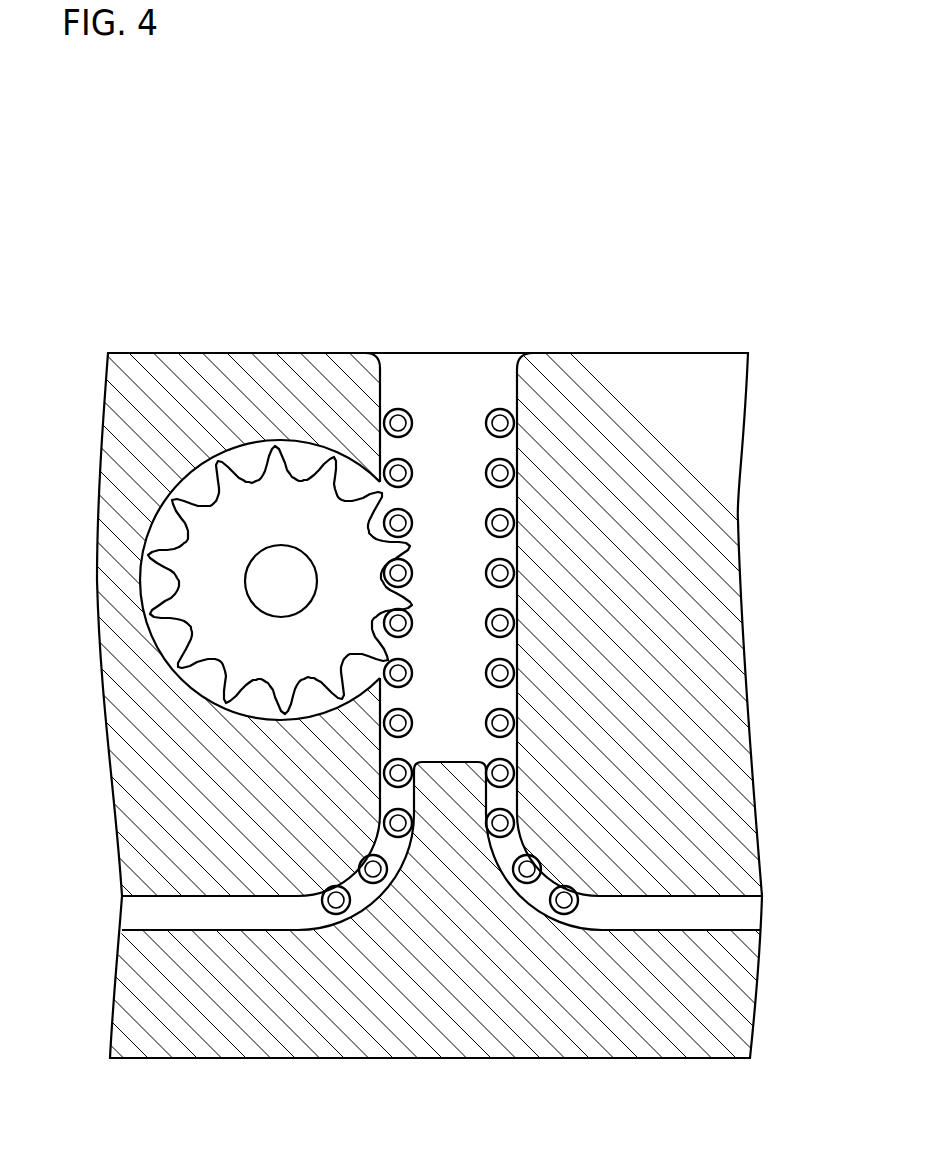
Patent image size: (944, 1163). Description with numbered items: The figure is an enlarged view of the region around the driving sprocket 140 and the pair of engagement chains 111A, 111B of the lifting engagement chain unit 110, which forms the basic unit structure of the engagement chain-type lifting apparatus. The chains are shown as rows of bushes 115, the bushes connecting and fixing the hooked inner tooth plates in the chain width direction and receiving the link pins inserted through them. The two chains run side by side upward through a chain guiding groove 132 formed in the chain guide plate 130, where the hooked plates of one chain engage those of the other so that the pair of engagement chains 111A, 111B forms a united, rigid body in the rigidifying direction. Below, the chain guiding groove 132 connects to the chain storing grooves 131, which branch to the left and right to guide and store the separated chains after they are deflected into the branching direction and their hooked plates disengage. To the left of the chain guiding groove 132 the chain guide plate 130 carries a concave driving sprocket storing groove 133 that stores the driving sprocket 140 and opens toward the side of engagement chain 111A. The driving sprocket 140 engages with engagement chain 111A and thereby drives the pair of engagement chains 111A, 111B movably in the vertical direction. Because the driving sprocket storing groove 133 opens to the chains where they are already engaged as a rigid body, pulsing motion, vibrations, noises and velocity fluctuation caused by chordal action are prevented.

The lifting engagement chain unit 110 is at (325, 180).
The engagement chain 111A is at (397, 388).
The engagement chain 111B is at (497, 380).
The bush 115 is at (412, 566).
The chain guide plate 130 is at (553, 492).
The chain storing groove 131 is at (273, 927).
The chain guiding groove 132 is at (506, 410).
The driving sprocket storing groove 133 is at (200, 484).
The driving sprocket 140 is at (213, 538).